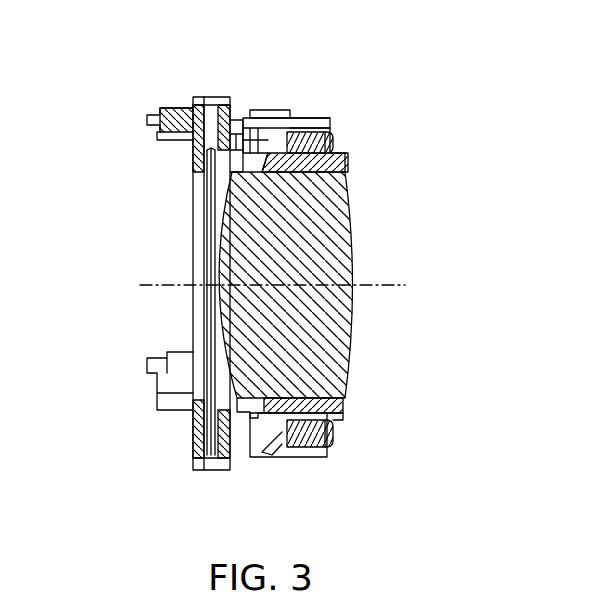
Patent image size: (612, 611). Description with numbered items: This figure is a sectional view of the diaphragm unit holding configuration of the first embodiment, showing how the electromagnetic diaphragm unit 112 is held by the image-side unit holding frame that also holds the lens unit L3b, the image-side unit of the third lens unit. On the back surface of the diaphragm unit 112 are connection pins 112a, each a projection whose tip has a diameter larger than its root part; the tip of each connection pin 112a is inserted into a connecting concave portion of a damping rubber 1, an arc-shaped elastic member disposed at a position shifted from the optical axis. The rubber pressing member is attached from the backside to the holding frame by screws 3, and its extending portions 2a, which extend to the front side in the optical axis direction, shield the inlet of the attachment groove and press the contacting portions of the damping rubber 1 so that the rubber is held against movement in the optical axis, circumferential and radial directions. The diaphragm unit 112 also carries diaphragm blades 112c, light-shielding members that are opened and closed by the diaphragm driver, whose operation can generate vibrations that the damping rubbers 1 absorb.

The diaphragm unit 112 is at (230, 467).
The connection pin 112a is at (239, 118).
The diaphragm blade 112c is at (212, 204).
The damping rubber 1 is at (263, 130).
The extending portion 2a is at (318, 128).
The screw 3 is at (332, 138).
The 3b-th lens unit L3b is at (300, 268).